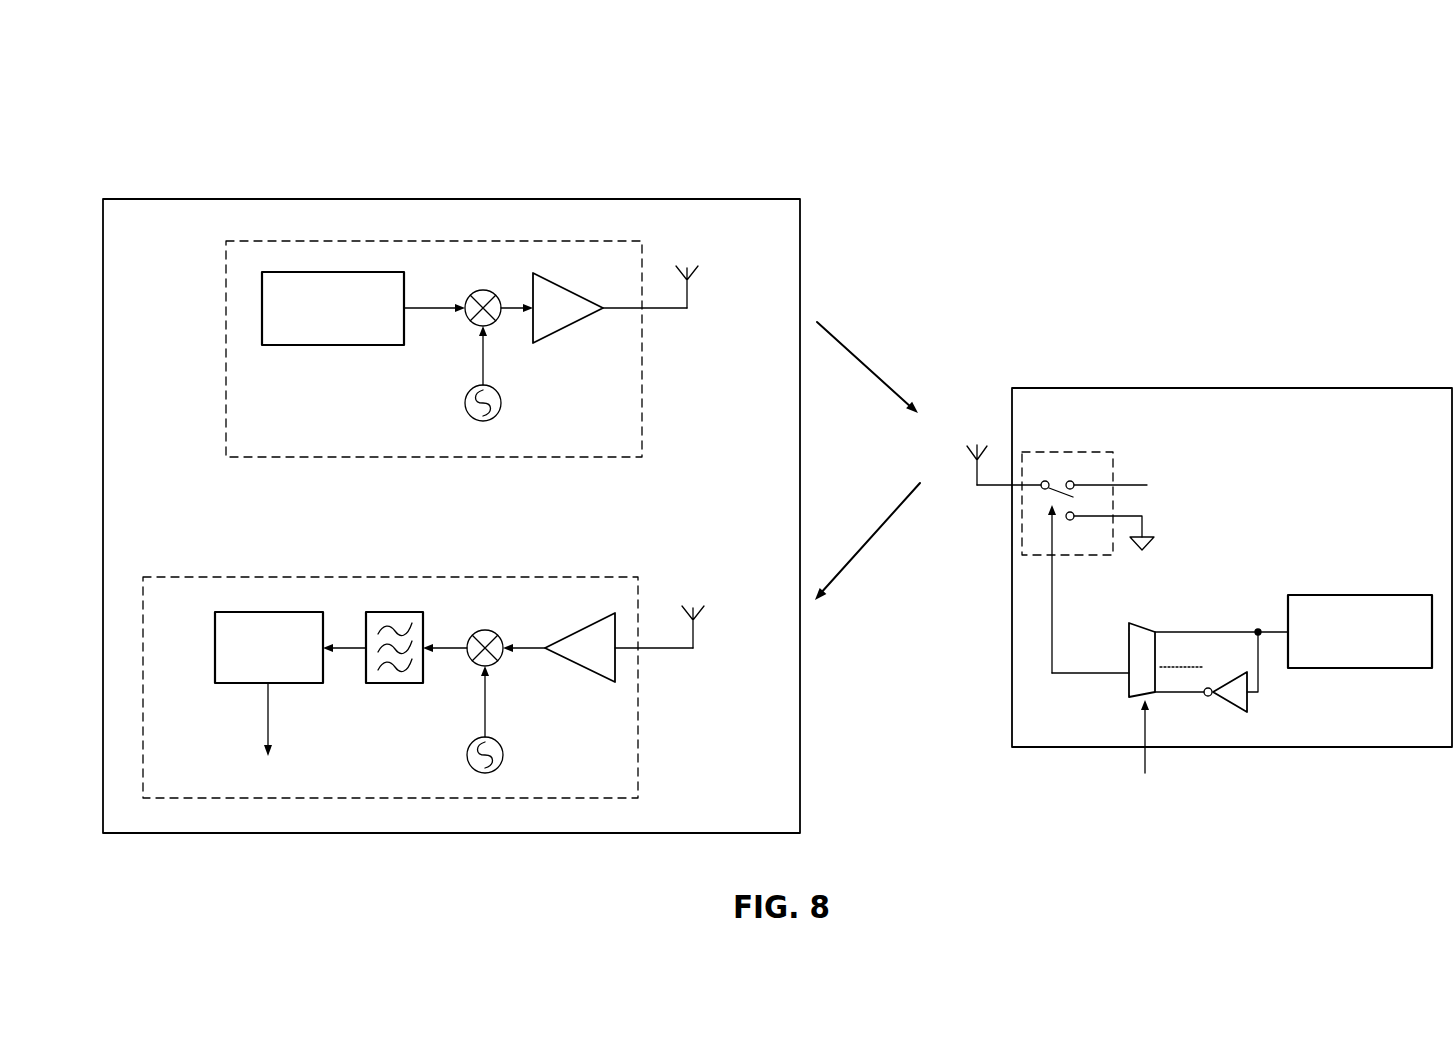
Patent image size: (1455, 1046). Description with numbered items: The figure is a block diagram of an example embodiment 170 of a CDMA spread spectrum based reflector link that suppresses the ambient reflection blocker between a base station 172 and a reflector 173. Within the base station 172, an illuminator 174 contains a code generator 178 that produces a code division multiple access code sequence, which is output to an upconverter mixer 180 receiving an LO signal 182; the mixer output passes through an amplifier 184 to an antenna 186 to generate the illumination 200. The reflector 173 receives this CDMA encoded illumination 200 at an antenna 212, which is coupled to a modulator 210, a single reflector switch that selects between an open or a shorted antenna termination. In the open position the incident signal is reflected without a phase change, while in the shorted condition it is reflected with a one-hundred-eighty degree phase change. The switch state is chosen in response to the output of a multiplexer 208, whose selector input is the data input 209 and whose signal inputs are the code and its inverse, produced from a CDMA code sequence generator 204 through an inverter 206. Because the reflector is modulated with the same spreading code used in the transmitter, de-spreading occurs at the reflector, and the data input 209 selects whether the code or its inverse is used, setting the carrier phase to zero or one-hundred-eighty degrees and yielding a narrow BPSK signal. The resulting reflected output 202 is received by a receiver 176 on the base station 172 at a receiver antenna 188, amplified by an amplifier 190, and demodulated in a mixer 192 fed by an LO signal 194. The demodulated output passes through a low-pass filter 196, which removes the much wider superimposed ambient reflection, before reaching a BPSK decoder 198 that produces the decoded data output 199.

The alternative reflective link architecture embodiment 170 is at (195, 121).
The base station 172 is at (803, 235).
The reflector 173 is at (1317, 388).
The illuminator 174 is at (305, 458).
The receiver 176 is at (263, 576).
The code generator 178 is at (343, 346).
The upconverter (mixer) 180 is at (482, 290).
The LO signal 182 is at (500, 408).
The amplifier 184 is at (545, 338).
The antenna 186 is at (693, 272).
The receiver antenna 188 is at (700, 612).
The amplifier 190 is at (586, 668).
The demodulator (mixer) 192 is at (486, 630).
The LO signal 194 is at (502, 760).
The filter 196 is at (371, 688).
The decoder 198 is at (231, 687).
The decoded data output 199 is at (265, 710).
The illumination 200 is at (850, 355).
The reflected output 202 is at (865, 542).
The CDMA code sequence generator 204 is at (1402, 594).
The inverter 206 is at (1240, 705).
The multiplexer 208 is at (1142, 622).
The data input 209 is at (1148, 763).
The modulator (reflector switch) 210 is at (1078, 451).
The antenna 212 is at (970, 452).